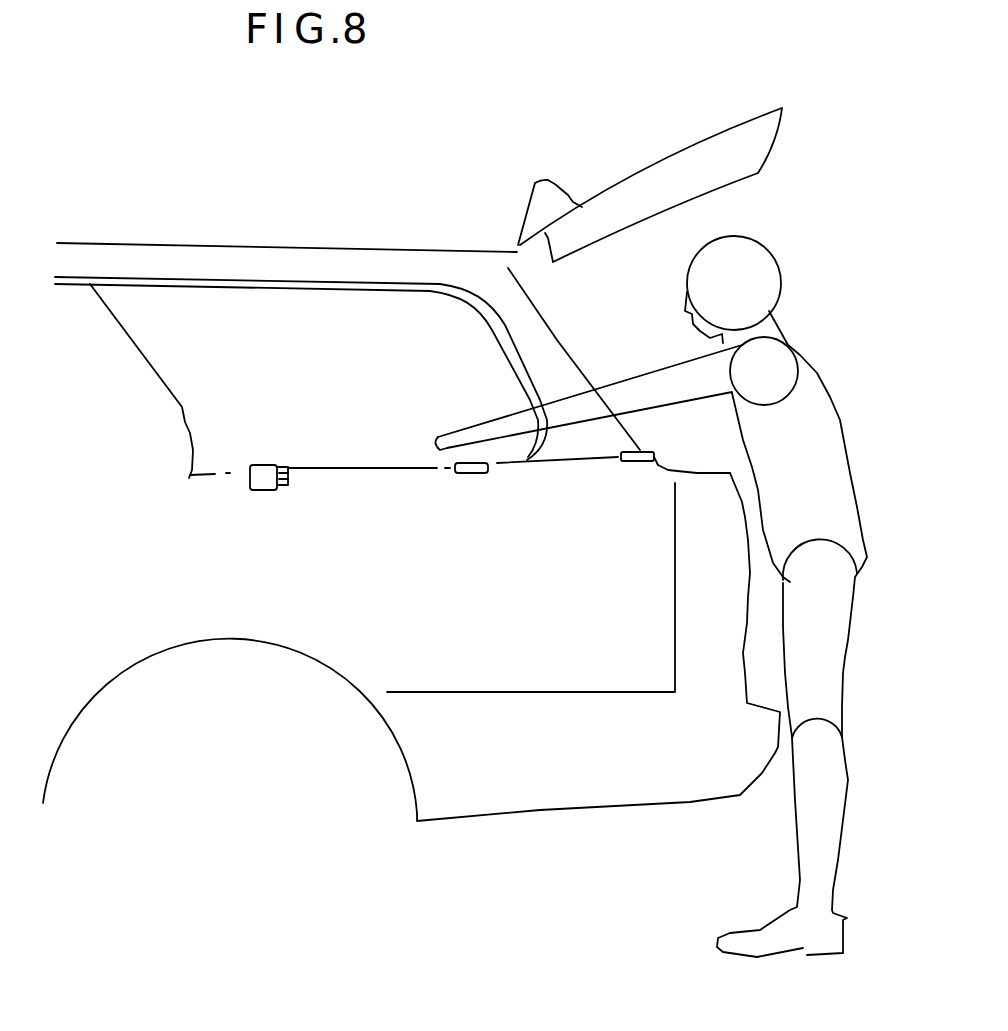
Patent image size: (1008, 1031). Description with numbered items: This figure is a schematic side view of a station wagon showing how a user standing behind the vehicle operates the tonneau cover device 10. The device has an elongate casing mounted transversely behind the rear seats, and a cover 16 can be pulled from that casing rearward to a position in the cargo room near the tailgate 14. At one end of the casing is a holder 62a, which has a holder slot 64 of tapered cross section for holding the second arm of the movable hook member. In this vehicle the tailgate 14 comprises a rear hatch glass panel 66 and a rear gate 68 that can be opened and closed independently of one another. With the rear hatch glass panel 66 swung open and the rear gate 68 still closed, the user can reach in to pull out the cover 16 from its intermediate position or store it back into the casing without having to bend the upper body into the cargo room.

The tonneau cover device 10 is at (334, 424).
The tailgate 14 is at (685, 471).
The cover 16 is at (366, 472).
The holder 62a is at (259, 490).
The holder slot 64 is at (284, 487).
The rear hatch glass panel 66 is at (692, 150).
The rear gate 68 is at (707, 573).